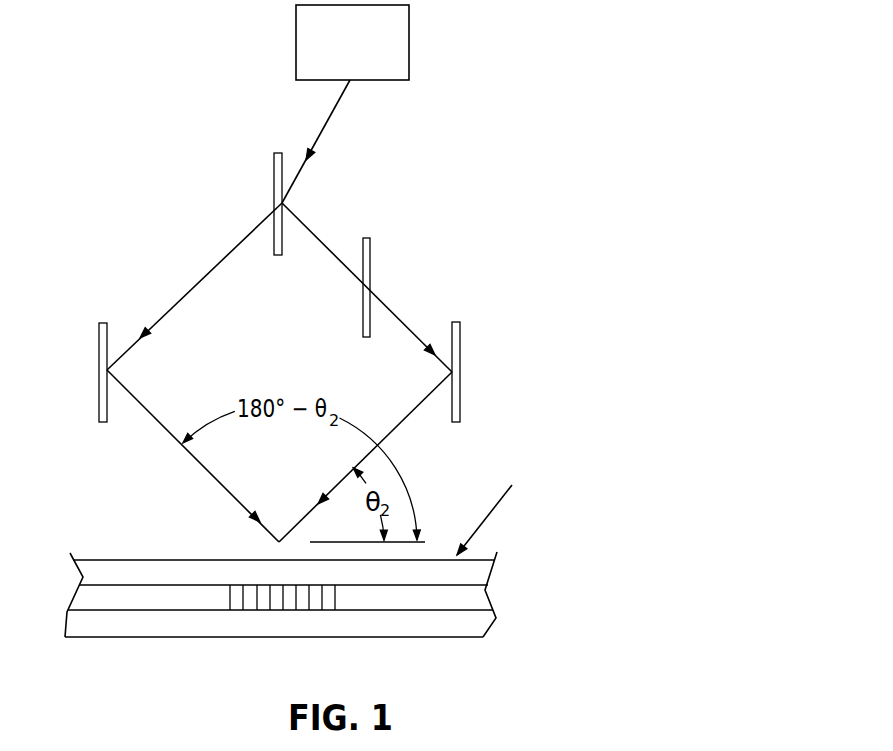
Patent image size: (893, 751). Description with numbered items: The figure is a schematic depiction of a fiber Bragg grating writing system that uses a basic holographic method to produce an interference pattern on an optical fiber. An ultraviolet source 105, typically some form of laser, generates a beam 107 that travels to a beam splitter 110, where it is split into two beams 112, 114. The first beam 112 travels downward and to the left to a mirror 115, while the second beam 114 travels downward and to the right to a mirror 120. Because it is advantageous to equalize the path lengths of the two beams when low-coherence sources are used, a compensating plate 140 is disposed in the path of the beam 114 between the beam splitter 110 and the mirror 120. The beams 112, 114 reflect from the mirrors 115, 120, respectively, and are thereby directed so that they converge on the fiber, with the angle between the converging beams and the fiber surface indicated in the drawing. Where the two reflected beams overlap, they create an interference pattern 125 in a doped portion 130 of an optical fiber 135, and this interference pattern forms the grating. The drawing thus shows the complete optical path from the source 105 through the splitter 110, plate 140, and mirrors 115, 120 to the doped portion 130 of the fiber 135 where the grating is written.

The ultraviolet source 105 is at (409, 32).
The beam 107 is at (338, 107).
The beam splitter 110 is at (274, 166).
The beam 112 is at (227, 248).
The beam 114 is at (317, 238).
The mirror 115 is at (108, 332).
The mirror 120 is at (460, 340).
The interference pattern 125 is at (250, 585).
The doped portion 130 is at (478, 598).
The optical fiber 135 is at (511, 509).
The compensating plate 140 is at (370, 250).